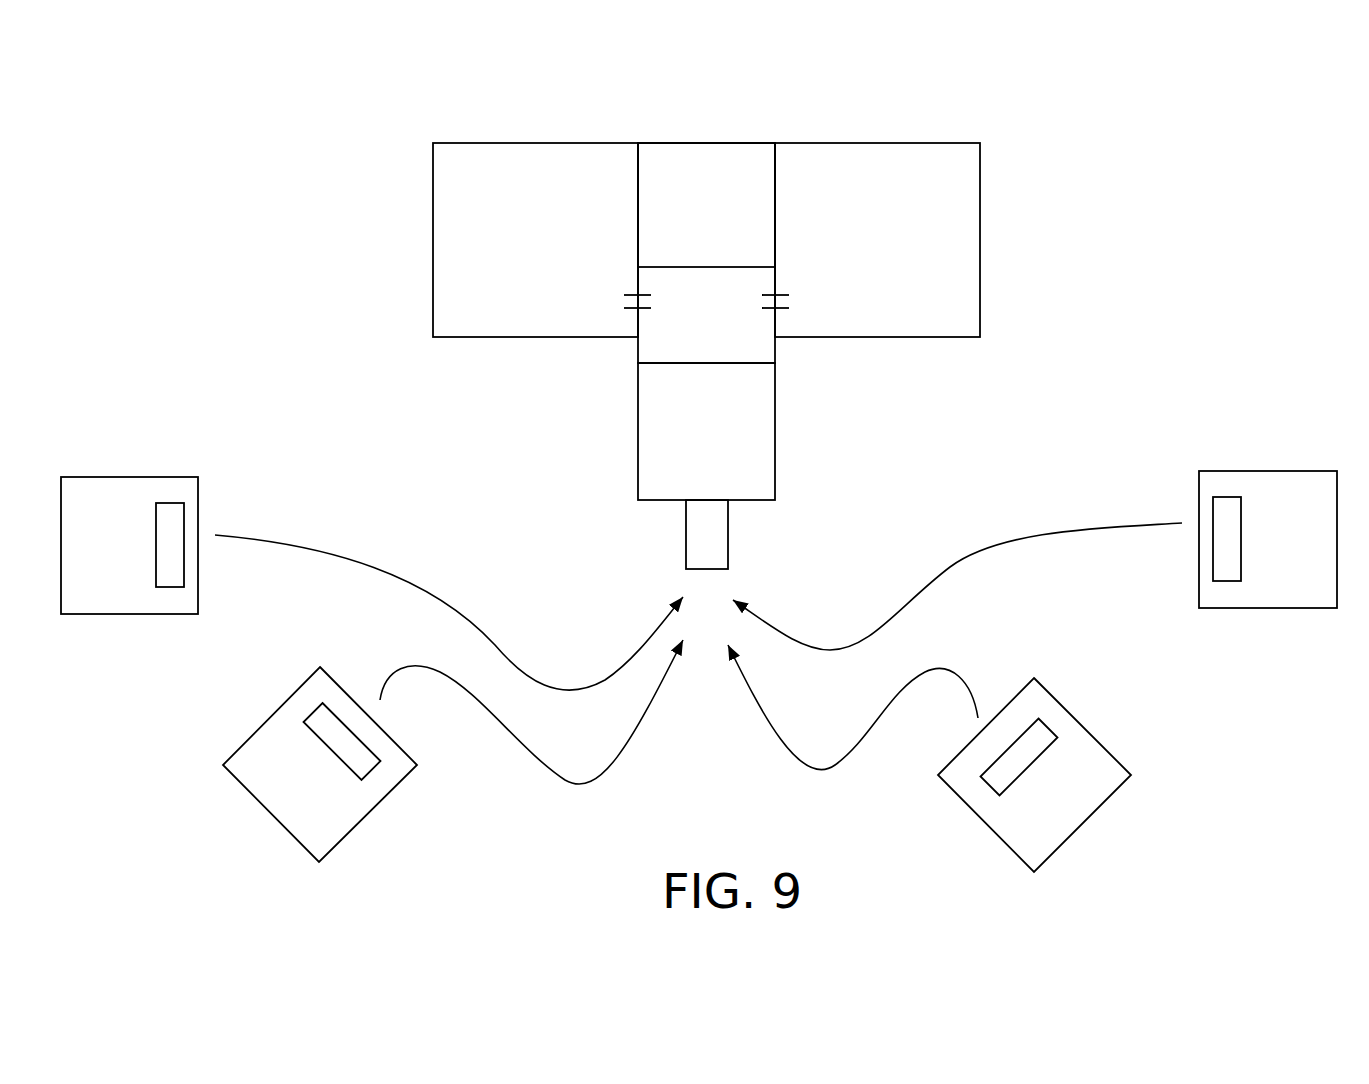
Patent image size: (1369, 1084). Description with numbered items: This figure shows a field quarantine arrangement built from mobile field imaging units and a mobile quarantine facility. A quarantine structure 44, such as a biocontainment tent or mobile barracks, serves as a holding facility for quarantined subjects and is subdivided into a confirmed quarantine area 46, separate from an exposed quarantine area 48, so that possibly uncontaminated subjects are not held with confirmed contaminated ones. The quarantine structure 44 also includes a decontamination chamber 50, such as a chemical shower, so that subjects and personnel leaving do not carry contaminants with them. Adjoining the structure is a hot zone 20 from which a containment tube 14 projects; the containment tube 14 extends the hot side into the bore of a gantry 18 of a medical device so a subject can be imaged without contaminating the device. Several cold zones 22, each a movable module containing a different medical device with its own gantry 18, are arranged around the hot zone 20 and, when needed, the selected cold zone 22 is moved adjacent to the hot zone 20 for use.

The quarantine structure 44 is at (740, 143).
The confirmed quarantine area 46 is at (516, 248).
The exposed quarantine area 48 is at (874, 253).
The decontamination chamber 50 is at (696, 213).
The hot zone 20 is at (694, 445).
The containment tube 14 is at (728, 547).
The cold zone 22 is at (89, 560).
The gantry 18 is at (173, 503).